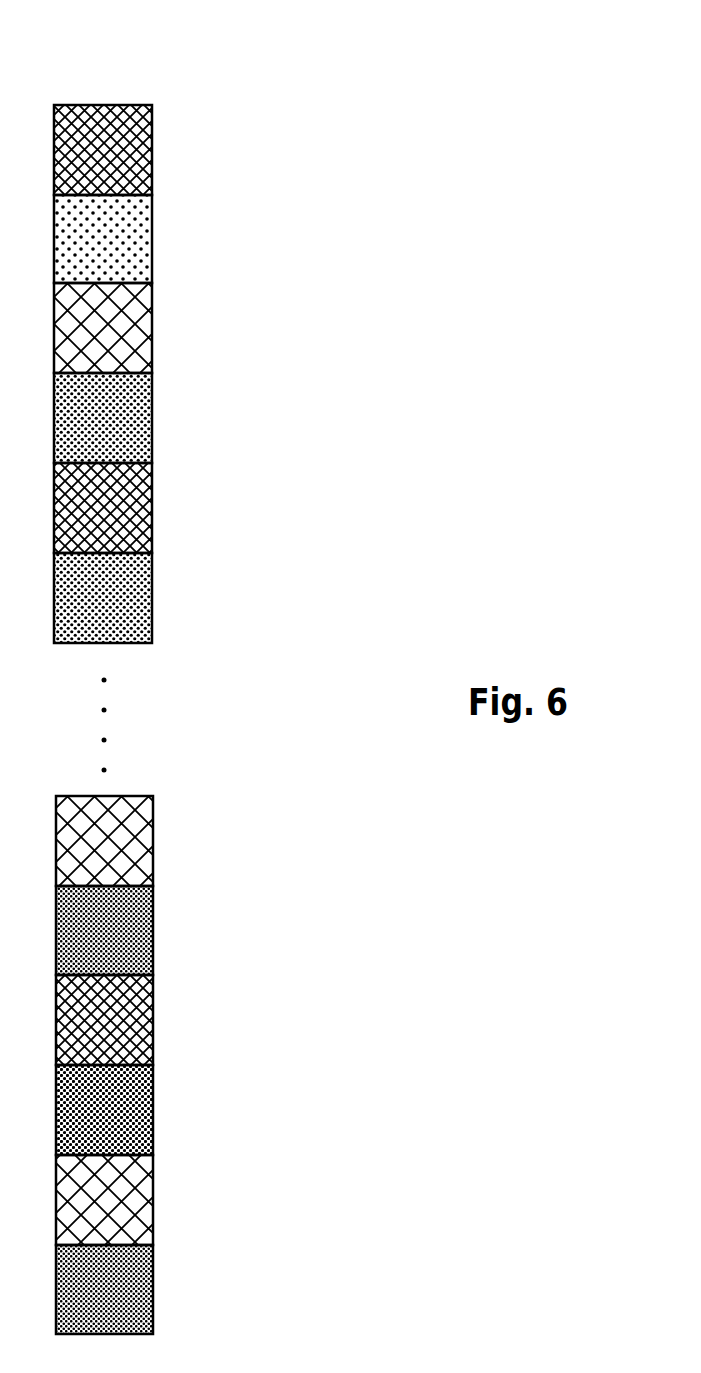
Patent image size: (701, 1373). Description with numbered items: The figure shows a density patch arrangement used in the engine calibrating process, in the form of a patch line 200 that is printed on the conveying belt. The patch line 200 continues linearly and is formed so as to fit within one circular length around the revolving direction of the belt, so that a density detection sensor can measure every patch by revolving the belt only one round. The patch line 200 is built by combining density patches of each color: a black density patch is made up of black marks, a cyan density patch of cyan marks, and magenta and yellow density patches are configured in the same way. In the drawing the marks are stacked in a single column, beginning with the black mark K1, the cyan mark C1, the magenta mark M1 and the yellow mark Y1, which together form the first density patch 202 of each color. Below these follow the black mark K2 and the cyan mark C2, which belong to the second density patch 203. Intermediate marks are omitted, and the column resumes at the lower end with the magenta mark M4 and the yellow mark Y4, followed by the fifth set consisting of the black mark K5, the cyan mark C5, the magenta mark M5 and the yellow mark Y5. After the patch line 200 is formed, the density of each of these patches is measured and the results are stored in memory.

The patch line 200 is at (205, 55).
The first density patch 202 is at (290, 105).
The second density patch 203 is at (290, 718).
The black mark K1 is at (152, 157).
The cyan mark C1 is at (152, 242).
The magenta mark M1 is at (152, 332).
The yellow mark Y1 is at (152, 422).
The black mark K2 is at (152, 514).
The cyan mark C2 is at (152, 602).
The magenta mark M4 is at (153, 853).
The yellow mark Y4 is at (153, 942).
The black mark K5 is at (153, 1018).
The cyan mark C5 is at (153, 1104).
The magenta mark M5 is at (153, 1195).
The yellow mark Y5 is at (153, 1285).